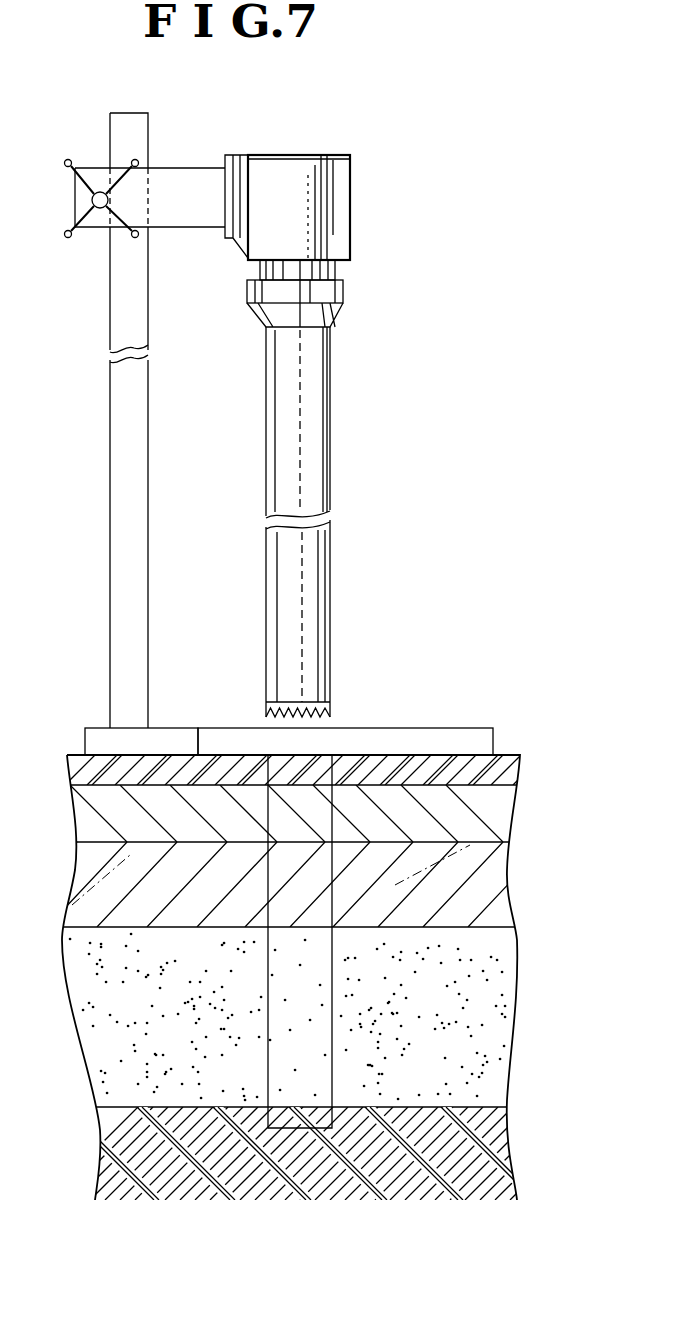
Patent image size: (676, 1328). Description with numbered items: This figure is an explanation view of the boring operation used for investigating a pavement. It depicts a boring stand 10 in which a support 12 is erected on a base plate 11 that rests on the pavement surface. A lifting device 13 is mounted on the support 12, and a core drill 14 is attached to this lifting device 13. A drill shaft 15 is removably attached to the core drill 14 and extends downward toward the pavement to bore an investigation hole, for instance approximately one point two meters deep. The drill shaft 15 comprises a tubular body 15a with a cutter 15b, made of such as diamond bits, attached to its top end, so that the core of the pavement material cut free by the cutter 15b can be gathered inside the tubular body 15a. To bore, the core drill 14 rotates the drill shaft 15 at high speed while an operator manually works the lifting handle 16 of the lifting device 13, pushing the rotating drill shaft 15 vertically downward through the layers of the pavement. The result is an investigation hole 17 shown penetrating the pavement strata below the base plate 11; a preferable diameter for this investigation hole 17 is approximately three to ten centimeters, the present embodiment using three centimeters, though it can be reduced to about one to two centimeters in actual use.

The boring stand 10 is at (104, 537).
The base plate 11 is at (458, 745).
The support 12 is at (125, 398).
The lifting device 13 is at (190, 180).
The core drill 14 is at (330, 210).
The drill shaft 15 is at (339, 433).
The tubular body 15a is at (310, 600).
The cutter 15b is at (330, 703).
The lifting handle 16 is at (75, 160).
The investigation hole 17 is at (338, 870).